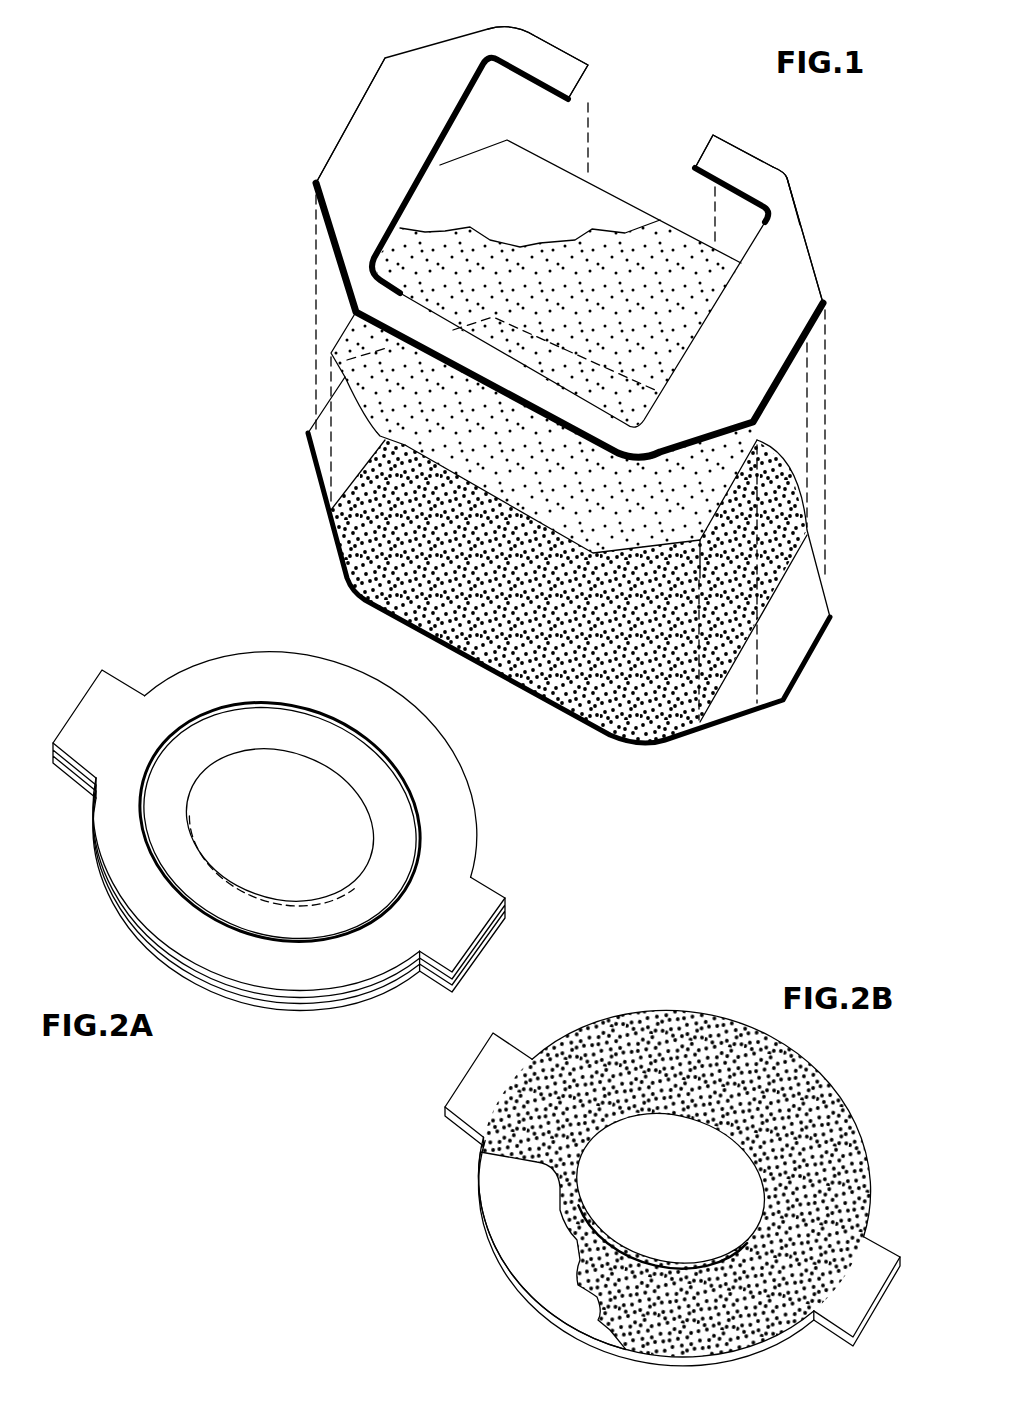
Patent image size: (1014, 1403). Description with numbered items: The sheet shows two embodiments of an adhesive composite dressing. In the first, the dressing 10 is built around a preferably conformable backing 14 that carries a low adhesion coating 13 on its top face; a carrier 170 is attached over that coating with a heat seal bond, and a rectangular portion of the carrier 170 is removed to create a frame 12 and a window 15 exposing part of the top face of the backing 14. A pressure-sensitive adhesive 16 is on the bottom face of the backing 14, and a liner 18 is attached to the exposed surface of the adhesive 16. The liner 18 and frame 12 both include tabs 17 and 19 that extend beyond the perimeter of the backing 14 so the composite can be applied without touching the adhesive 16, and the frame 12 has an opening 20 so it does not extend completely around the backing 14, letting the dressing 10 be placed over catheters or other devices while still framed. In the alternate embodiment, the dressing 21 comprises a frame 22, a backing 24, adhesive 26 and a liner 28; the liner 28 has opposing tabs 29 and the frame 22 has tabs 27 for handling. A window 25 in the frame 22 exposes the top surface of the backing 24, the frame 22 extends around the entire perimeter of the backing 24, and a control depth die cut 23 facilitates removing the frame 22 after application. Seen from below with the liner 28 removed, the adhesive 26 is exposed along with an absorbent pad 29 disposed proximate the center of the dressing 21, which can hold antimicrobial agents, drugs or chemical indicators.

In FIG. 1, the adhesive composite dressing 10 is at (314, 110).
In FIG. 1, the frame 12 is at (340, 170).
In FIG. 1, the low adhesion coating 13 is at (620, 295).
In FIG. 1, the backing 14 is at (603, 198).
In FIG. 1, the window 15 is at (507, 97).
In FIG. 1, the pressure-sensitive adhesive 16 is at (357, 548).
In FIG. 1, the tab 17 is at (385, 95).
In FIG. 1, the carrier 170 is at (772, 178).
In FIG. 1, the liner 18 is at (750, 732).
In FIG. 1, the tab 19 is at (310, 433).
In FIG. 1, the opening 20 is at (700, 157).
In FIG. 2A, the dressing 21 is at (147, 648).
In FIG. 2B, the dressing 21 is at (656, 986).
In FIG. 2A, the frame 22 is at (364, 958).
In FIG. 2B, the frame 22 is at (547, 1303).
In FIG. 2A, the control depth die cut 23 is at (240, 712).
In FIG. 2A, the backing 24 is at (337, 1007).
In FIG. 2B, the backing 24 is at (530, 1210).
In FIG. 2A, the window 25 is at (397, 807).
In FIG. 2A, the adhesive 26 is at (305, 1003).
In FIG. 2B, the adhesive 26 is at (702, 1033).
In FIG. 2A, the tab 27 is at (93, 697).
In FIG. 2B, the tab 27 is at (497, 1053).
In FIG. 2A, the liner 28 is at (253, 1000).
In FIG. 2A, the absorbent pad 29 is at (72, 777).
In FIG. 2B, the absorbent pad 29 is at (655, 1172).